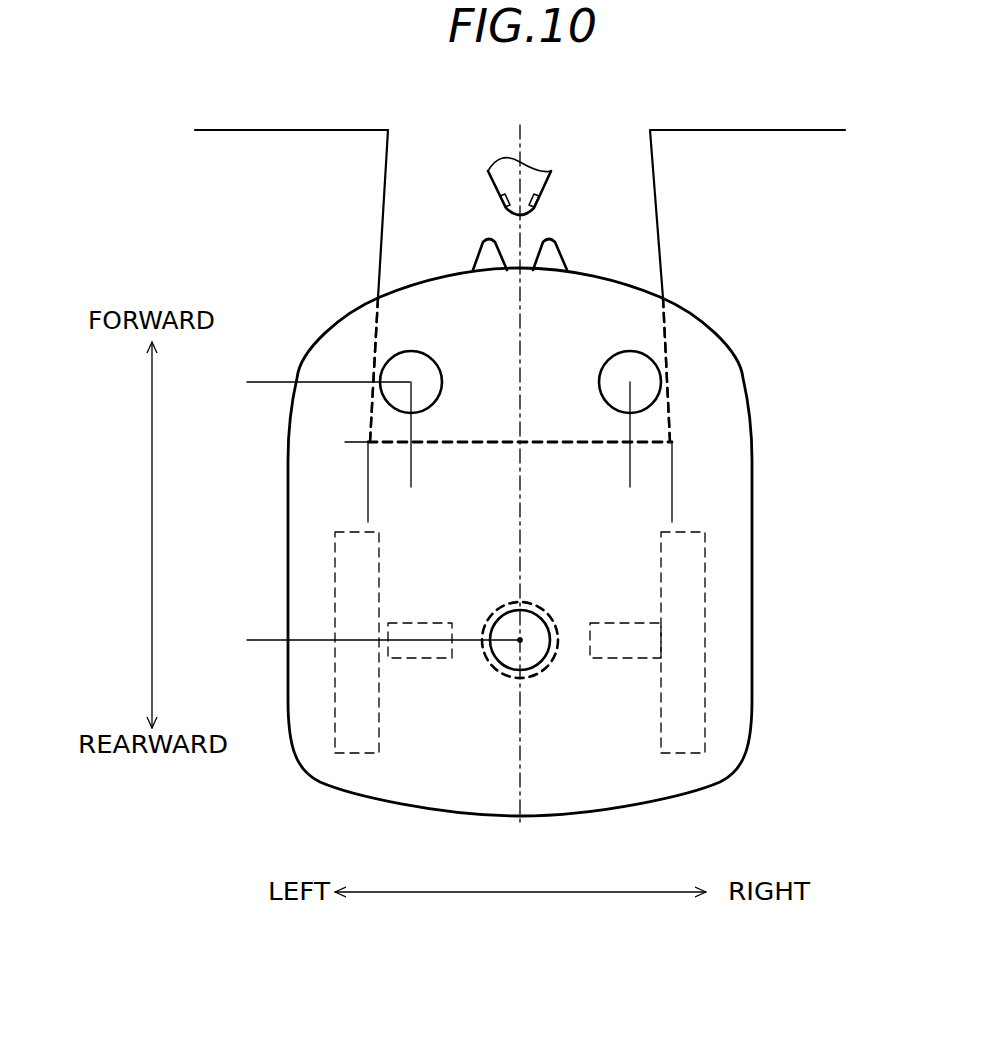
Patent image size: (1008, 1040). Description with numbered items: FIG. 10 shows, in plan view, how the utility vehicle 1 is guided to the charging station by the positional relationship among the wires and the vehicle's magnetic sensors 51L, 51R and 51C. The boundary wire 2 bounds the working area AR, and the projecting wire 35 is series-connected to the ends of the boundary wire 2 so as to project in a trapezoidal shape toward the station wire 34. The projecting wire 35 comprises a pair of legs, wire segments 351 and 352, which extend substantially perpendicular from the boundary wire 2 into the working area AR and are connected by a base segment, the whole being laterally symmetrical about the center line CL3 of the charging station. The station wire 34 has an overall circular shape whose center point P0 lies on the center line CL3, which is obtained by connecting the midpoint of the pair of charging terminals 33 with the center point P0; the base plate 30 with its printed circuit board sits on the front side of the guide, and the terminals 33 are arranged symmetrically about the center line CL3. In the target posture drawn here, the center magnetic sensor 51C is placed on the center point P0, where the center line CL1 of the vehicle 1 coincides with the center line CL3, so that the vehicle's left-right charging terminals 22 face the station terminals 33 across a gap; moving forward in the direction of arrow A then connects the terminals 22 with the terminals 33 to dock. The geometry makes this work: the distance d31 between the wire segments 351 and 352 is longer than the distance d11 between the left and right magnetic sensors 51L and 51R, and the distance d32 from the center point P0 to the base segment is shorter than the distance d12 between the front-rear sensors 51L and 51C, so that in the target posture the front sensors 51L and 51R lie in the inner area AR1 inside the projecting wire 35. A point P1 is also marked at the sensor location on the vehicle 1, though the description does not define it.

The vehicle 1 is at (755, 460).
The boundary wire 2 is at (276, 130).
The charging terminals 22 is at (482, 243).
The base plate 30 is at (641, 267).
The charging terminals 33 is at (497, 200).
The station wire 34 is at (491, 668).
The projecting wire 35 is at (666, 284).
The left magnetic sensor 51L is at (393, 360).
The right magnetic sensor 51R is at (663, 389).
The center magnetic sensor 51C is at (532, 670).
The wire segment 351 is at (370, 358).
The wire segment 352 is at (668, 355).
The working area AR is at (729, 184).
The inner area AR1 is at (415, 197).
The arrow A is at (535, 284).
The center point P0 is at (522, 637).
The point P1 is at (520, 640).
The distance d11 is at (413, 462).
The distance d12 is at (272, 384).
The distance d31 is at (370, 497).
The distance d32 is at (356, 638).
The center line CL1 is at (524, 488).
The center line CL3 is at (524, 488).